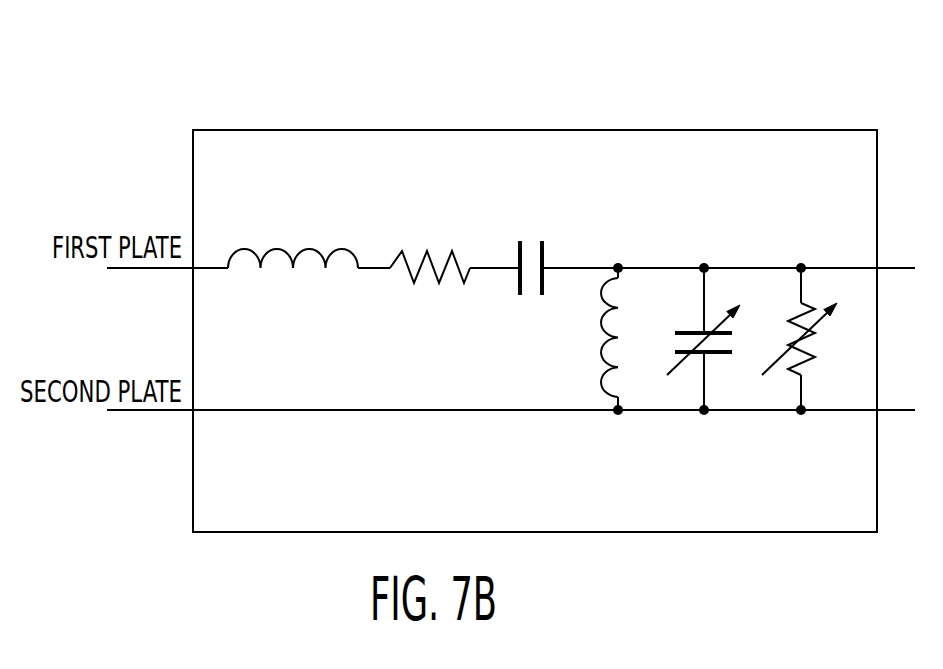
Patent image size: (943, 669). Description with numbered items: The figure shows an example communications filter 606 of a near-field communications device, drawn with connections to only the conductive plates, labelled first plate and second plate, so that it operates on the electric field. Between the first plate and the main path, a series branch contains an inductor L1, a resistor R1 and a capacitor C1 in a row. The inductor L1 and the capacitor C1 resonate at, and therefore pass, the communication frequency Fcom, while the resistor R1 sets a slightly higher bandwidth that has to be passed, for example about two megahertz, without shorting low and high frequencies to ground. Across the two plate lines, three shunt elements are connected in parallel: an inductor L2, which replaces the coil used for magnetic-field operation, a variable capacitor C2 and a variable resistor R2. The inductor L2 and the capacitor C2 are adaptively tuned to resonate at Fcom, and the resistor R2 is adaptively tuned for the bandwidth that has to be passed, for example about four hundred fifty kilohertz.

The communications filter 606 is at (773, 130).
The inductor L1 is at (293, 239).
The resistor R1 is at (430, 246).
The capacitor C1 is at (531, 252).
The inductor L2 is at (592, 339).
The variable capacitor C2 is at (703, 317).
The variable resistor R2 is at (799, 317).